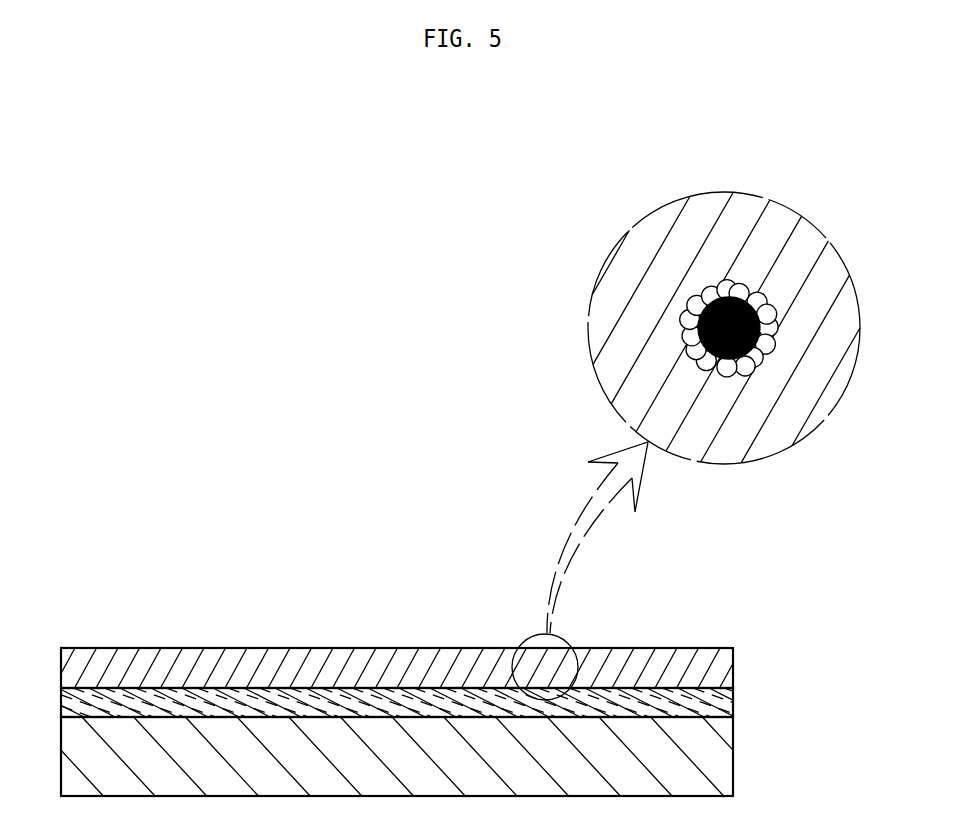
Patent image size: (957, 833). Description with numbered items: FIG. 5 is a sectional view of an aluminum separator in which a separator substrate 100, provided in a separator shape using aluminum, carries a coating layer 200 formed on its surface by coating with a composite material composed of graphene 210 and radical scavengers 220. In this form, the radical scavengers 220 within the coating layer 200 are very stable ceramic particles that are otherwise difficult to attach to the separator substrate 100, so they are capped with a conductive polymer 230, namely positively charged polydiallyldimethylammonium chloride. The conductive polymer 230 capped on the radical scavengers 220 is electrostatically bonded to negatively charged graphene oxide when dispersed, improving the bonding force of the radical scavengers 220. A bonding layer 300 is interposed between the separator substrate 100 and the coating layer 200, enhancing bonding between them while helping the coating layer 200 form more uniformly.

The separator substrate 100 is at (712, 770).
The coating layer 200 is at (712, 670).
The graphene 210 is at (651, 238).
The radical scavengers 220 is at (727, 283).
The conductive polymer 230 is at (680, 328).
The bonding layer 300 is at (708, 702).